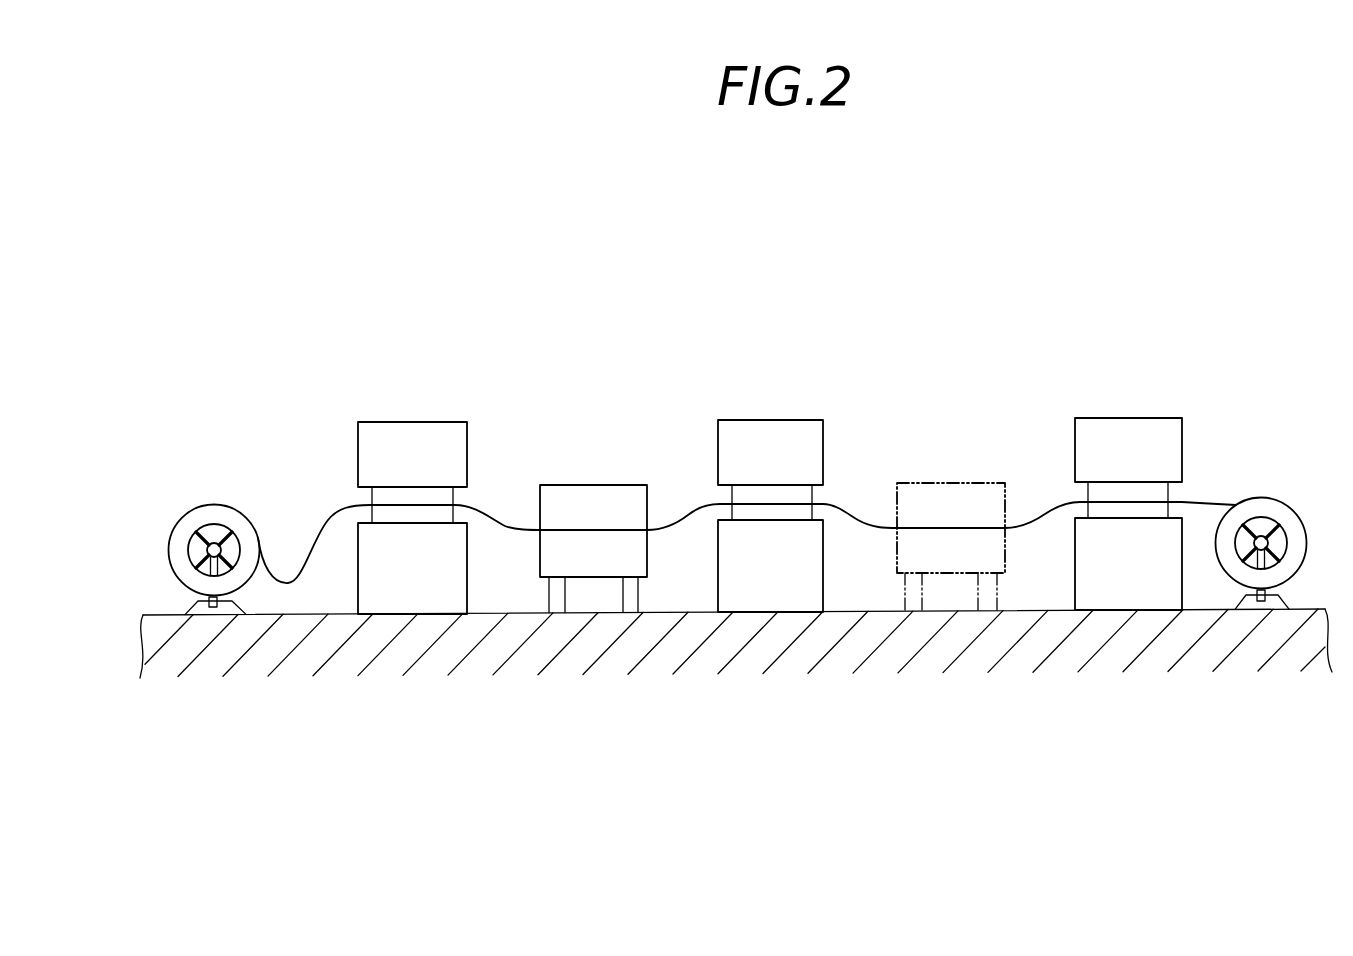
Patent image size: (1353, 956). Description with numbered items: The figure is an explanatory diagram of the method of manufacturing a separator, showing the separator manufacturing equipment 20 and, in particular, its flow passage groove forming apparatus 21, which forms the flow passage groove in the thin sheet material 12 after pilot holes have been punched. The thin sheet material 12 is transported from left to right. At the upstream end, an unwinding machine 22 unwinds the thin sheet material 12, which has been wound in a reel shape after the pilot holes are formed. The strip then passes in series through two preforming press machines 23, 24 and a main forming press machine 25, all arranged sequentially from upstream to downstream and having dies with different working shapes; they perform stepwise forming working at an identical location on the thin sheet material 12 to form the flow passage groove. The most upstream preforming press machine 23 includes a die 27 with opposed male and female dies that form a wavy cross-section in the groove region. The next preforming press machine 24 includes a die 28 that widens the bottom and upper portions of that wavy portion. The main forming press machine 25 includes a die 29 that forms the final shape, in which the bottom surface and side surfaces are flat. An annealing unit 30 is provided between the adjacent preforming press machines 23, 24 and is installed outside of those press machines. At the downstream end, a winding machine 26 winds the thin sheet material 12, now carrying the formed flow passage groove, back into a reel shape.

The thin sheet material 12 is at (323, 518).
The separator manufacturing equipment 20 is at (935, 250).
The flow passage groove forming apparatus 21 is at (915, 362).
The unwinding machine 22 is at (193, 515).
The preforming press machine 23 is at (475, 423).
The preforming press machine 24 is at (832, 422).
The main forming press machine 25 is at (1190, 418).
The winding machine 26 is at (1288, 518).
The die 27 is at (458, 498).
The die 28 is at (815, 495).
The die 29 is at (1172, 492).
The annealing unit 30 is at (650, 477).